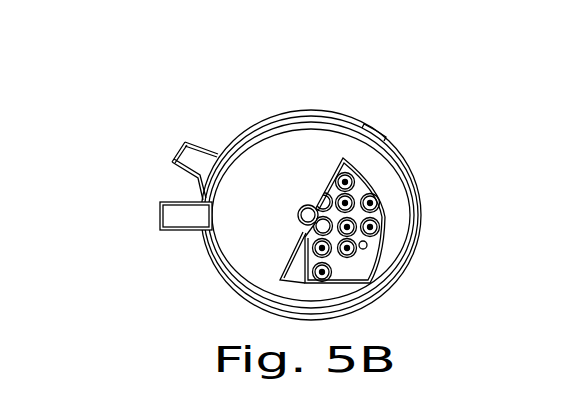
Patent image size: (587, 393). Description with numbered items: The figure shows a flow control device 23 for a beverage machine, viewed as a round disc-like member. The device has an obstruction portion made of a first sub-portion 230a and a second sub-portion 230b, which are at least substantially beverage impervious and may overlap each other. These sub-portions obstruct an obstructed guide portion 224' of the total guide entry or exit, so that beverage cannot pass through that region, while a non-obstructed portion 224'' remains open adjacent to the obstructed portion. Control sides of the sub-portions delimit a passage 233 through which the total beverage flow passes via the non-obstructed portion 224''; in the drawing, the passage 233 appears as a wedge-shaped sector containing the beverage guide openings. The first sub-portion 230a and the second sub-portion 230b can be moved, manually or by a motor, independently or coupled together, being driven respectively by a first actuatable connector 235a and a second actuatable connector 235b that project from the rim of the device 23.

The flow control device 23 is at (207, 100).
The second actuatable connector 235b is at (195, 160).
The first actuatable connector 235a is at (165, 222).
The second sub-portion 230b is at (277, 172).
The passage 233 is at (343, 265).
The obstructed guide portion 224' is at (407, 202).
The non-obstructed portion 224'' is at (404, 250).
The first sub-portion 230a is at (290, 265).